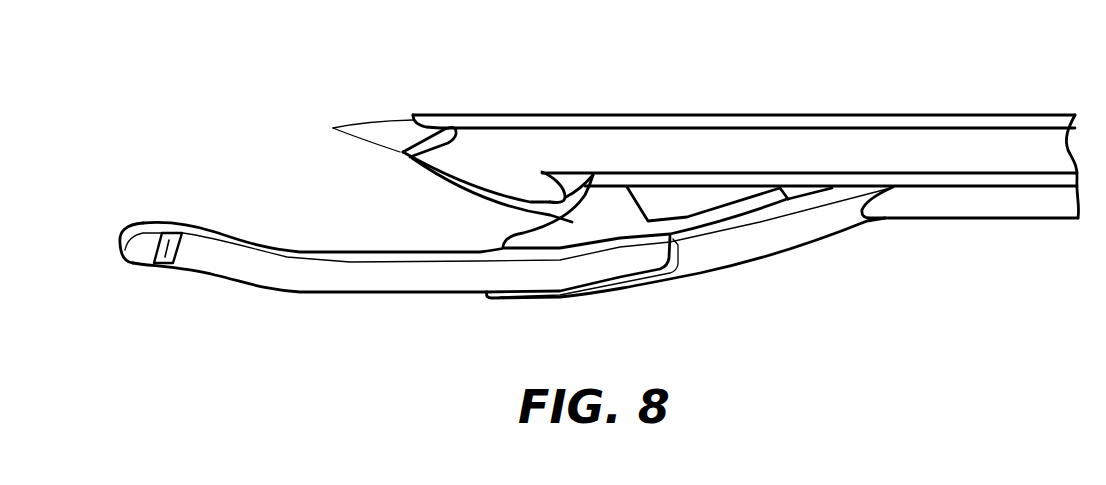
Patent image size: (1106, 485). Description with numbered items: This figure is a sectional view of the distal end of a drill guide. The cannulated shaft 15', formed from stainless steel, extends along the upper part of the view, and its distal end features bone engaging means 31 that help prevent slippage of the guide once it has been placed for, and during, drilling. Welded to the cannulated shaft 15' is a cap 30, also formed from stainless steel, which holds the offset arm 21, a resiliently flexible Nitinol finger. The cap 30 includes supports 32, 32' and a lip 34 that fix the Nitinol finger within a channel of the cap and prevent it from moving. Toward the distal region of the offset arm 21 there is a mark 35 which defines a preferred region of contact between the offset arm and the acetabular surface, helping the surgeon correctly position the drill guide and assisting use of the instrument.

The cannulated shaft 15' is at (746, 129).
The offset arm 21 is at (357, 275).
The cap 30 is at (738, 243).
The bone engaging means 31 is at (437, 169).
The support 32 is at (687, 139).
The support 32' is at (935, 254).
The lip 34 is at (505, 248).
The mark 35 is at (163, 264).